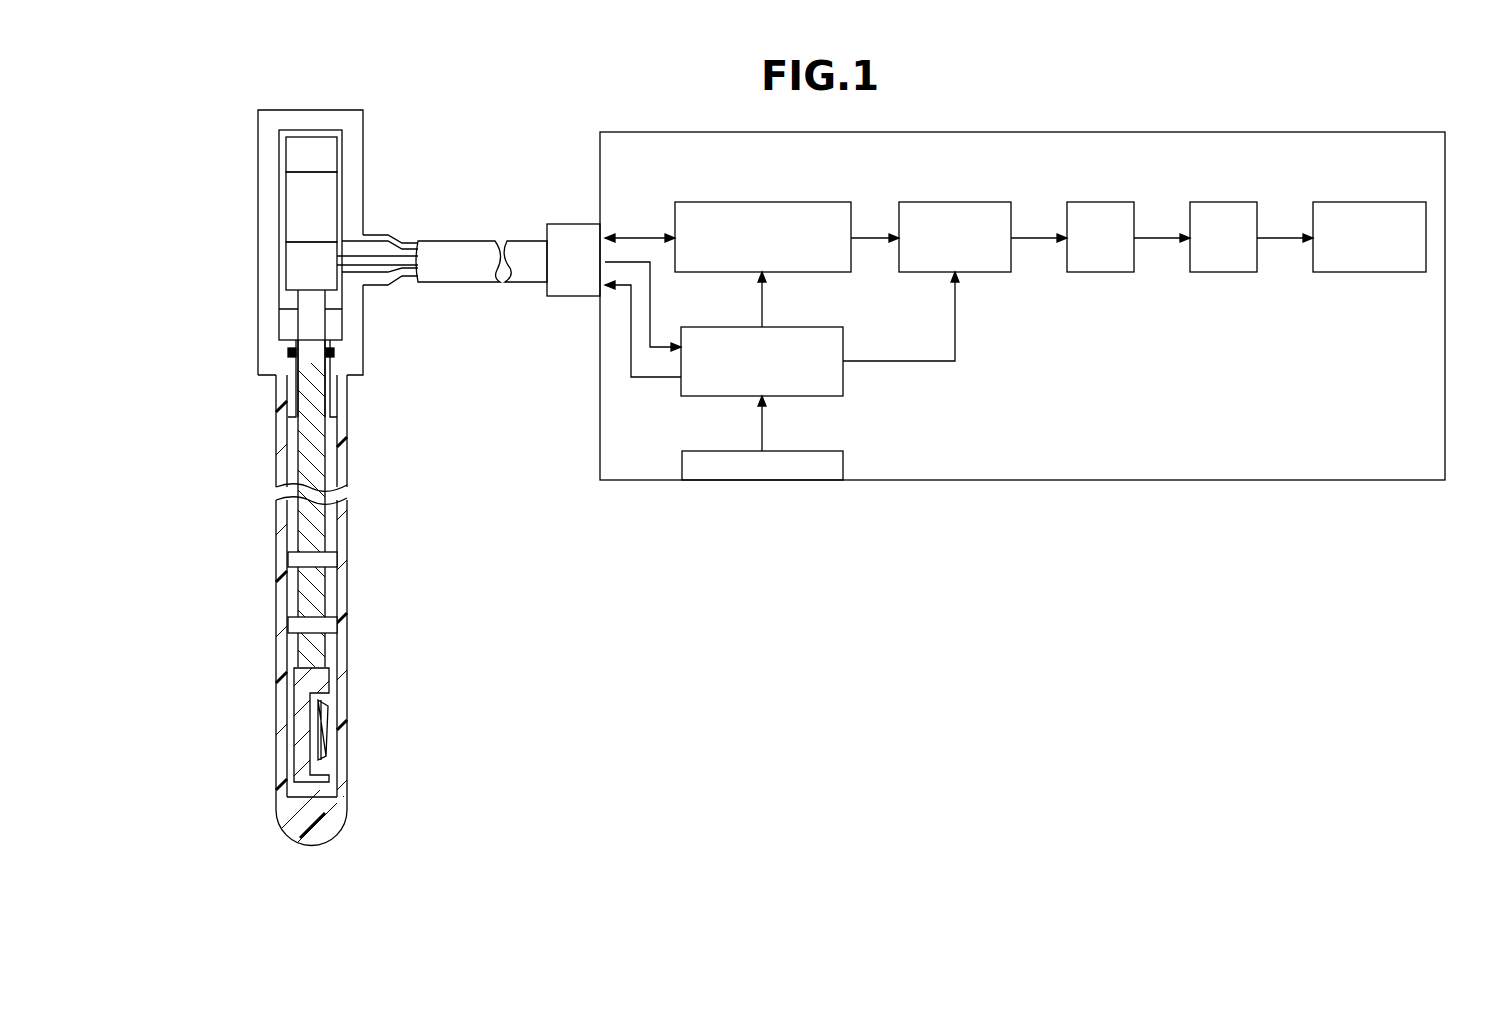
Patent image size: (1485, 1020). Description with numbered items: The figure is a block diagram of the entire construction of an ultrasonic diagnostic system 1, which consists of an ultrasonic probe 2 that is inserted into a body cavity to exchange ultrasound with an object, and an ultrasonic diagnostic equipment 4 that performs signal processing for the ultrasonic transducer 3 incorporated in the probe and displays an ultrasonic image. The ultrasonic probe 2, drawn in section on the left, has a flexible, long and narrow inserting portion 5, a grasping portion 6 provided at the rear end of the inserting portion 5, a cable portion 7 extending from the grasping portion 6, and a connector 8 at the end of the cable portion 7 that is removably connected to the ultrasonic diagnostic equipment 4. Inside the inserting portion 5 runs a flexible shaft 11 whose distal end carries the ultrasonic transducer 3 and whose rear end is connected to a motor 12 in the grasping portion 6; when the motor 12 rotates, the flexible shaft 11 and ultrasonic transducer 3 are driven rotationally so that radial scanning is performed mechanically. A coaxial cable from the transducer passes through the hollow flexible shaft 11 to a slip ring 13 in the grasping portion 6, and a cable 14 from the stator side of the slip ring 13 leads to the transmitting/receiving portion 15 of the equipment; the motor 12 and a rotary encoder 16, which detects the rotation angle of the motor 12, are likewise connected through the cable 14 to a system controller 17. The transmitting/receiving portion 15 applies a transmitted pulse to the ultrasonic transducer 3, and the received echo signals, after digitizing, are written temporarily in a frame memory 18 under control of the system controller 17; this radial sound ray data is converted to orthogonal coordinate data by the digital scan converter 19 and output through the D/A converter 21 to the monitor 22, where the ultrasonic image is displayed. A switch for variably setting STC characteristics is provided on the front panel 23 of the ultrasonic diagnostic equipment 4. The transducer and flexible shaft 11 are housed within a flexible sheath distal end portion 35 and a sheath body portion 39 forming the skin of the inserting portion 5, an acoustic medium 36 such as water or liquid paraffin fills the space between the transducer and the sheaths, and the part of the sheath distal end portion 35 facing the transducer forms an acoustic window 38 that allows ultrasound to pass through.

The ultrasonic diagnostic system 1 is at (793, 597).
The ultrasonic probe 2 is at (360, 466).
The ultrasonic transducer 3 is at (343, 676).
The ultrasonic diagnostic equipment 4 is at (578, 450).
The inserting portion 5 is at (276, 527).
The grasping portion 6 is at (258, 332).
The cable portion 7 is at (467, 283).
The connector 8 is at (573, 297).
The flexible shaft 11 is at (318, 542).
The motor 12 is at (292, 205).
The slip ring 13 is at (292, 266).
The cable 14 is at (397, 258).
The transmitting/receiving portion 15 is at (762, 202).
The rotary encoder 16 is at (278, 158).
The system controller 17 is at (846, 382).
The frame memory 18 is at (955, 202).
The digital scan converter 19 is at (1100, 202).
The D/A converter 21 is at (1222, 202).
The monitor 22 is at (1370, 202).
The front panel 23 is at (846, 452).
The sheath distal end portion 35 is at (278, 653).
The acoustic medium 36 is at (293, 593).
The acoustic window 38 is at (340, 750).
The sheath body portion 39 is at (280, 435).